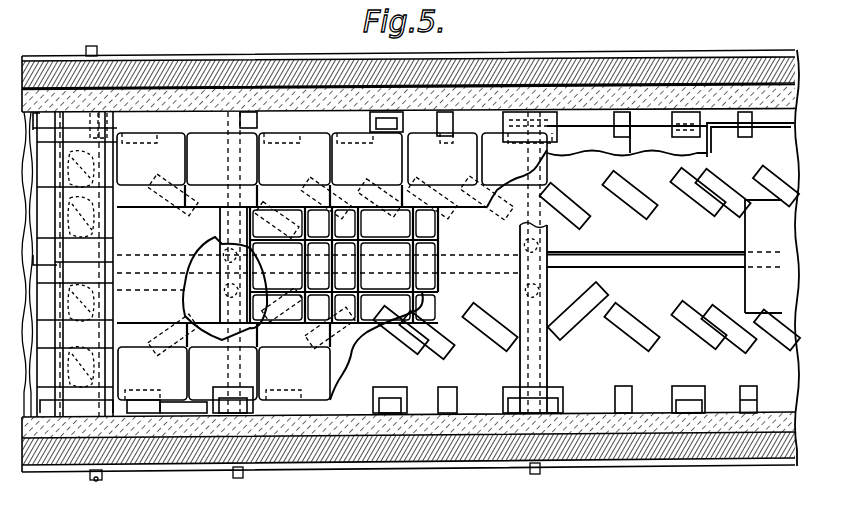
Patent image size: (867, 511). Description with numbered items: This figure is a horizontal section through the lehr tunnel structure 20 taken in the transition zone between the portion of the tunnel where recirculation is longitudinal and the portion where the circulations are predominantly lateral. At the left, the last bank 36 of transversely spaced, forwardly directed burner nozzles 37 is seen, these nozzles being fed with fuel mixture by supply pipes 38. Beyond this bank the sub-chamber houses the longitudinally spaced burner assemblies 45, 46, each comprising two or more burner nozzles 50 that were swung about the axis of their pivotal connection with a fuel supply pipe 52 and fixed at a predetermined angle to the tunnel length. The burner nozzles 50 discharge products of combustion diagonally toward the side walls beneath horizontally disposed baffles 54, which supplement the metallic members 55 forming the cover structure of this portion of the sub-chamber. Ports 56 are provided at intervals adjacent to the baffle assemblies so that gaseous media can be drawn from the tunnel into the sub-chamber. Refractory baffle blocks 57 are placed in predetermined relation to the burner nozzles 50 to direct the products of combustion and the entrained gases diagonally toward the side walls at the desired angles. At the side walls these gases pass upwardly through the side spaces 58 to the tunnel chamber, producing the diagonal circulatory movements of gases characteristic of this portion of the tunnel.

The lehr tunnel structure 20 is at (491, 56).
The bank of burner nozzles 36 is at (107, 253).
The burner nozzle 37 is at (63, 221).
The supply pipe 38 is at (98, 50).
The burner assembly 45 is at (248, 281).
The burner assembly 46 is at (562, 272).
The burner nozzle 50 is at (221, 281).
The fuel supply pipe 52 is at (541, 475).
The horizontally disposed baffle 54 is at (750, 228).
The metallic member 55 is at (462, 200).
The port 56 is at (566, 237).
The refractory baffle block 57 is at (390, 172).
The side space 58 is at (284, 127).